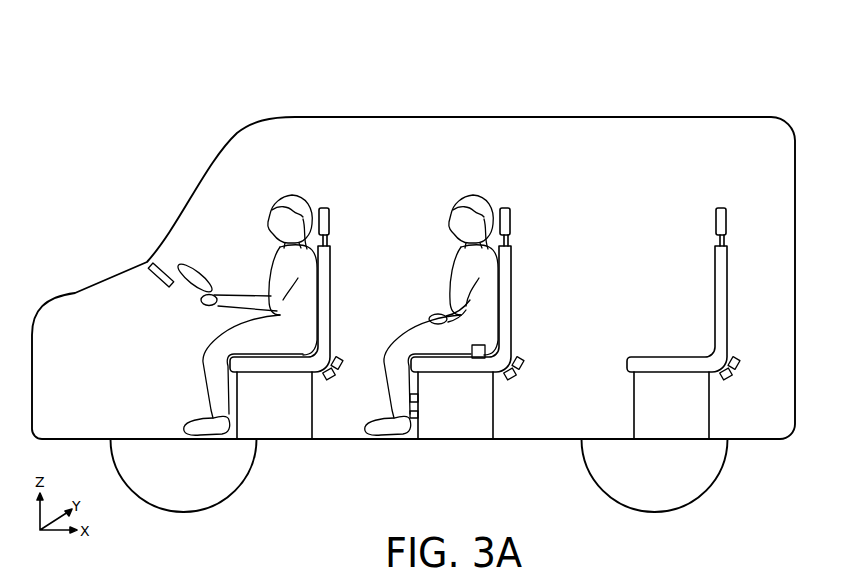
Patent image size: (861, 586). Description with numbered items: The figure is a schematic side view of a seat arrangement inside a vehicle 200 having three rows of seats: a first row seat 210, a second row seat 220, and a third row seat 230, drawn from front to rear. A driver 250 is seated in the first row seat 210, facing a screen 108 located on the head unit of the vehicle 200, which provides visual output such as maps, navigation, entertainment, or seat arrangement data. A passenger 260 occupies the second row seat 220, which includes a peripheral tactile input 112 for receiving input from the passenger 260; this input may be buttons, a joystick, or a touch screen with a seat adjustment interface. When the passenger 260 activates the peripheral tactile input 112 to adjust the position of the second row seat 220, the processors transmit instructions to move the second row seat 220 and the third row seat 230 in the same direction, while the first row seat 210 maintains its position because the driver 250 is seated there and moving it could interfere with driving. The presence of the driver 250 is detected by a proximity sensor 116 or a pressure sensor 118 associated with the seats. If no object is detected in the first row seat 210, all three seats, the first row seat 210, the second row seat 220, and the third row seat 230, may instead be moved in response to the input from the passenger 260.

The vehicle 200 is at (706, 88).
The screen 108 is at (152, 263).
The peripheral tactile input 112 is at (478, 345).
The proximity sensor 116 is at (341, 357).
The pressure sensor 118 is at (332, 382).
The first row seat 210 is at (325, 207).
The second row seat 220 is at (507, 207).
The third row seat 230 is at (721, 207).
The driver 250 is at (287, 194).
The passenger 260 is at (468, 195).